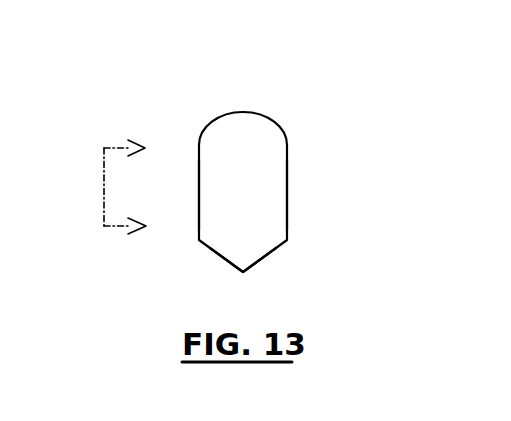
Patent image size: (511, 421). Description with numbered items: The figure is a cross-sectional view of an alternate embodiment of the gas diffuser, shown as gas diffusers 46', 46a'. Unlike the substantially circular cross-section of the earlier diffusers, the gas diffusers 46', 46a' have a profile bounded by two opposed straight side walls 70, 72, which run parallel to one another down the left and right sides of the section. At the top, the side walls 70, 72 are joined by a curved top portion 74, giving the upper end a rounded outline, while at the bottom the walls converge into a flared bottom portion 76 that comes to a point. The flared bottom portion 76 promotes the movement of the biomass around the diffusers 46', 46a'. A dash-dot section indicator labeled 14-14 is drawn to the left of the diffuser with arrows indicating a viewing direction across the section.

The separation element 46' is at (333, 190).
The separation element body 46a' is at (243, 192).
The rounded upper end 74 is at (237, 118).
The right side wall 72 is at (287, 193).
The left side wall 70 is at (199, 195).
The pointed lower end 76 is at (245, 273).
The section line 14-14 is at (102, 180).